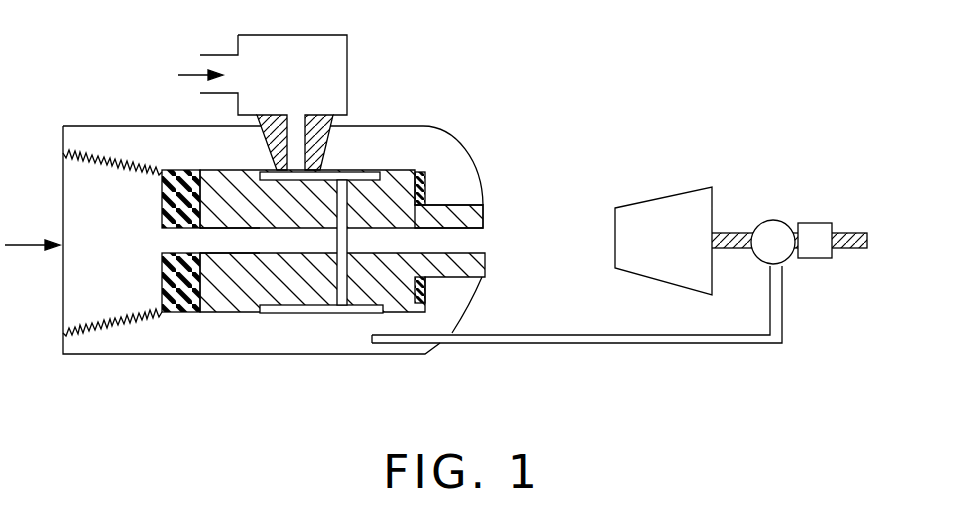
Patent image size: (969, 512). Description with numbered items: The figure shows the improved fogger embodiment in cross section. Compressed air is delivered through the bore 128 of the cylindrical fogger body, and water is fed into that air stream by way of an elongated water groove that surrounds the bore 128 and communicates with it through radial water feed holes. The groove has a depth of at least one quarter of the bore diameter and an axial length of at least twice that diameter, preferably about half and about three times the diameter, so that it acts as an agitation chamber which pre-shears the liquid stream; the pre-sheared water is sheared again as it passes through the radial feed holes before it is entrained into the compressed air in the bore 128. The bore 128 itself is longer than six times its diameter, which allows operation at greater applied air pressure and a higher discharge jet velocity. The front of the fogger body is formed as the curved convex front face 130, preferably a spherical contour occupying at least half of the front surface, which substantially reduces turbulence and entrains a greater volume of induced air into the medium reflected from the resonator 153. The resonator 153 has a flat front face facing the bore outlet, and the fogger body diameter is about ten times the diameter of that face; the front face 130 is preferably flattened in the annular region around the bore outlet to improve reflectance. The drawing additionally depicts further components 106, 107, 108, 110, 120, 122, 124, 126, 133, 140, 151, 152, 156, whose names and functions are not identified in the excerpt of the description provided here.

The housing 106 is at (128, 140).
The inlet wall 107 is at (93, 163).
The seal 108 is at (173, 277).
The seal 110 is at (425, 193).
The lower electrode block 120 is at (222, 300).
The passage 122 is at (455, 267).
The rod 124 is at (345, 272).
The plate 126 is at (363, 175).
The bore 128 is at (253, 240).
The fogger body front face 130 is at (450, 147).
The support block 133 is at (482, 213).
The nozzle 140 is at (273, 138).
The tube 151 is at (565, 340).
The valve 152 is at (772, 228).
The resonator 153 is at (647, 213).
The motor 156 is at (820, 250).